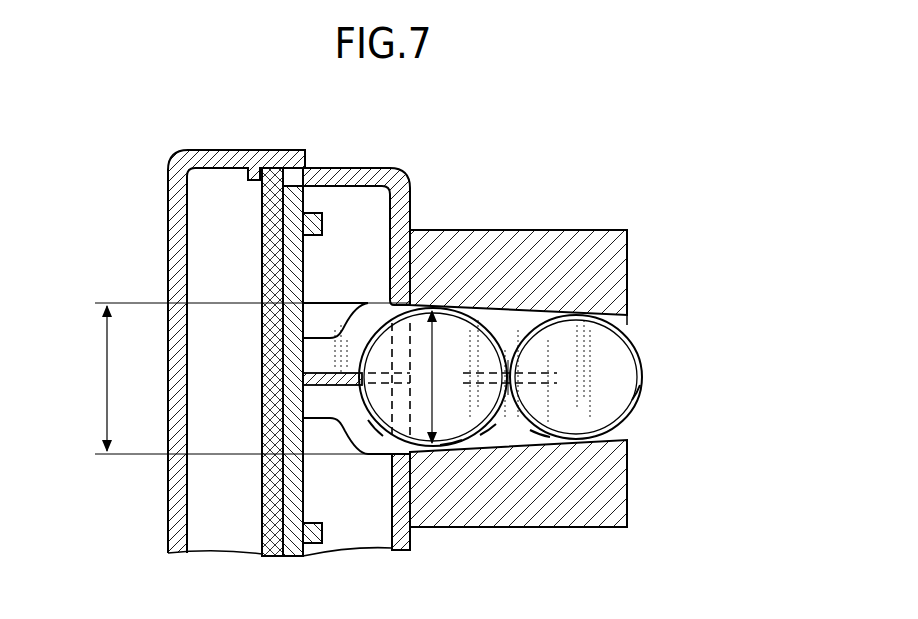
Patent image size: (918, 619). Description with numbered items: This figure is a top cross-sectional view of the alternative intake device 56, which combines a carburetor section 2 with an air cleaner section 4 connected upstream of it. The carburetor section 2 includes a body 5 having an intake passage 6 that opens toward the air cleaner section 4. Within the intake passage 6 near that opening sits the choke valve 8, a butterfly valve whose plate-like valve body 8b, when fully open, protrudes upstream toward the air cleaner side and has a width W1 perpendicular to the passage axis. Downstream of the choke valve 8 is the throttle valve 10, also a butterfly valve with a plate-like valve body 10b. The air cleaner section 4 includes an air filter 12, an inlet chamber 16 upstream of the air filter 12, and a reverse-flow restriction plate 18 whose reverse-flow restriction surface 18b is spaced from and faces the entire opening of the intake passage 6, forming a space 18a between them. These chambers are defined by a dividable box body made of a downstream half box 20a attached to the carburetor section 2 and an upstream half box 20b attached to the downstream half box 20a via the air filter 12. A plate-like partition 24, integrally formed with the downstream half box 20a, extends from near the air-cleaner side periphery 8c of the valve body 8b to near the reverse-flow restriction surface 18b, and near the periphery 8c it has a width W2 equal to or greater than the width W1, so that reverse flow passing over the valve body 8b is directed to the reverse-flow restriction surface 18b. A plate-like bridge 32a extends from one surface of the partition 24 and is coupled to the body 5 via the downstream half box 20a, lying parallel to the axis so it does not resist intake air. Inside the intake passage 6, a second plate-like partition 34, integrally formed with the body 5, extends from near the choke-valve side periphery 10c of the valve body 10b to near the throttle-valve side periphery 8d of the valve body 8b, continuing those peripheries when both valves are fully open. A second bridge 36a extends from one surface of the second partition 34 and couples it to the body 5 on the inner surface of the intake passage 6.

The carburetor section 2 is at (560, 178).
The air cleaner section 4 is at (325, 150).
The body 5 is at (577, 230).
The intake passage 6 is at (627, 325).
The choke valve 8 is at (480, 320).
The valve body 8b is at (450, 432).
The air-cleaner side periphery 8c is at (383, 436).
The throttle-valve side periphery 8d is at (493, 430).
The throttle valve 10 is at (612, 318).
The valve body 10b is at (623, 403).
The choke-valve side periphery 10c is at (540, 443).
The air filter 12 is at (260, 233).
The inlet chamber 16 is at (220, 508).
The reverse-flow restriction plate 18 is at (290, 467).
The space 18a is at (354, 492).
The reverse-flow restriction surface 18b is at (303, 262).
The downstream half box 20a is at (357, 167).
The upstream half box 20b is at (168, 173).
The partition 24 is at (318, 338).
The bridge 32a is at (322, 382).
The second partition 34 is at (517, 435).
The second bridge 36a is at (515, 340).
The intake device 56 is at (700, 233).
The width W1 is at (433, 378).
The width W2 is at (236, 378).